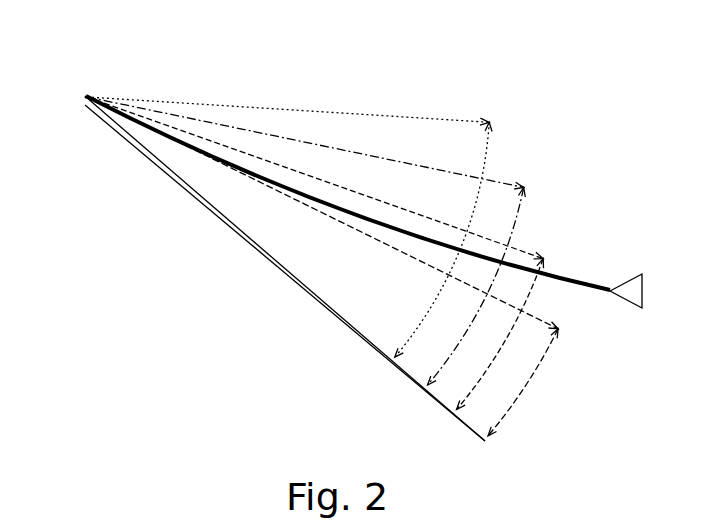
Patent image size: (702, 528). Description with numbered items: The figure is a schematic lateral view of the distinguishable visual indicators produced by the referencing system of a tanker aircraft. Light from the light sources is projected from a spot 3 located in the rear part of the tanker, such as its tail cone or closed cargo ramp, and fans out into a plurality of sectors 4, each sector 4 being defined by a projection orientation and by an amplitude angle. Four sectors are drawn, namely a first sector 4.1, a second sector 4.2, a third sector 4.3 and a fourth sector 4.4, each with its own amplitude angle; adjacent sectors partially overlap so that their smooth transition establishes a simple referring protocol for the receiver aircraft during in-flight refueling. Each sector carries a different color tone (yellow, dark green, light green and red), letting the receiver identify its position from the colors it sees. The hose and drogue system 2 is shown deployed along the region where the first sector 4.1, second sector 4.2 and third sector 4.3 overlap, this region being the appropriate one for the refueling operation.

The hose and drogue system 2 is at (598, 280).
The spot 3 is at (85, 107).
The sector 4 is at (359, 232).
The first sector 4.1 is at (463, 133).
The second sector 4.2 is at (497, 213).
The third sector 4.3 is at (515, 288).
The fourth sector 4.4 is at (505, 392).